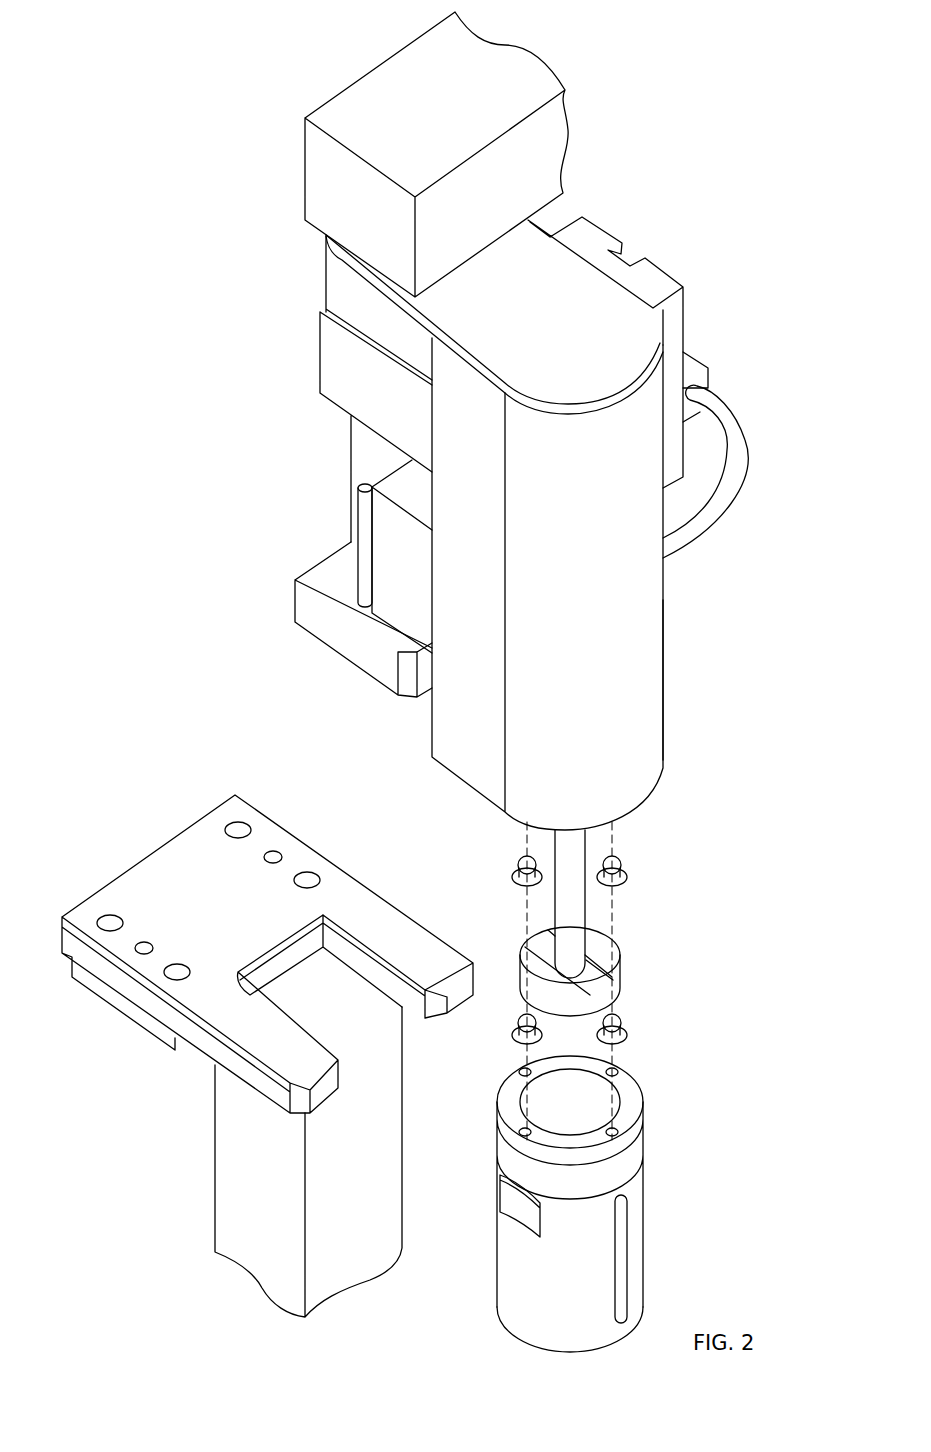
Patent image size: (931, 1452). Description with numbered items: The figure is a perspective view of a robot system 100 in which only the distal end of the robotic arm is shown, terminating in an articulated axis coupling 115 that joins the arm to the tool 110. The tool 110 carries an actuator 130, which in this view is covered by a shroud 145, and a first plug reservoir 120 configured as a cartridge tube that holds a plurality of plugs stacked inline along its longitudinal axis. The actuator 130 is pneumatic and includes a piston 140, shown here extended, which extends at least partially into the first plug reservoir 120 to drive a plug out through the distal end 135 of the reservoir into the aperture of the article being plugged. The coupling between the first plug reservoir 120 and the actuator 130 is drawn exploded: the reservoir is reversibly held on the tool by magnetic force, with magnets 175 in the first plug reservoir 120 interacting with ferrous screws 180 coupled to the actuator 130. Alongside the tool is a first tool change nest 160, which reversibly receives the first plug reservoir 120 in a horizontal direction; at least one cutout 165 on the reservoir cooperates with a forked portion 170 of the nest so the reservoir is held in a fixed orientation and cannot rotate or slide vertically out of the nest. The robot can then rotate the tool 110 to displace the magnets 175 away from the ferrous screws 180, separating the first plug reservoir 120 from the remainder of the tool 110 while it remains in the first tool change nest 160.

The robot system 100 is at (642, 128).
The tool 110 is at (740, 337).
The articulated axis coupling 115 is at (367, 72).
The first plug reservoir 120 is at (645, 1228).
The actuator 130 is at (640, 608).
The distal end 135 is at (538, 1352).
The piston 140 is at (585, 915).
The shroud 145 is at (665, 698).
The first tool change nest 160 is at (150, 858).
The cutout 165 is at (517, 1202).
The forked portion 170 is at (275, 1048).
The magnets 175 is at (640, 1102).
The ferrous screws 180 is at (540, 888).